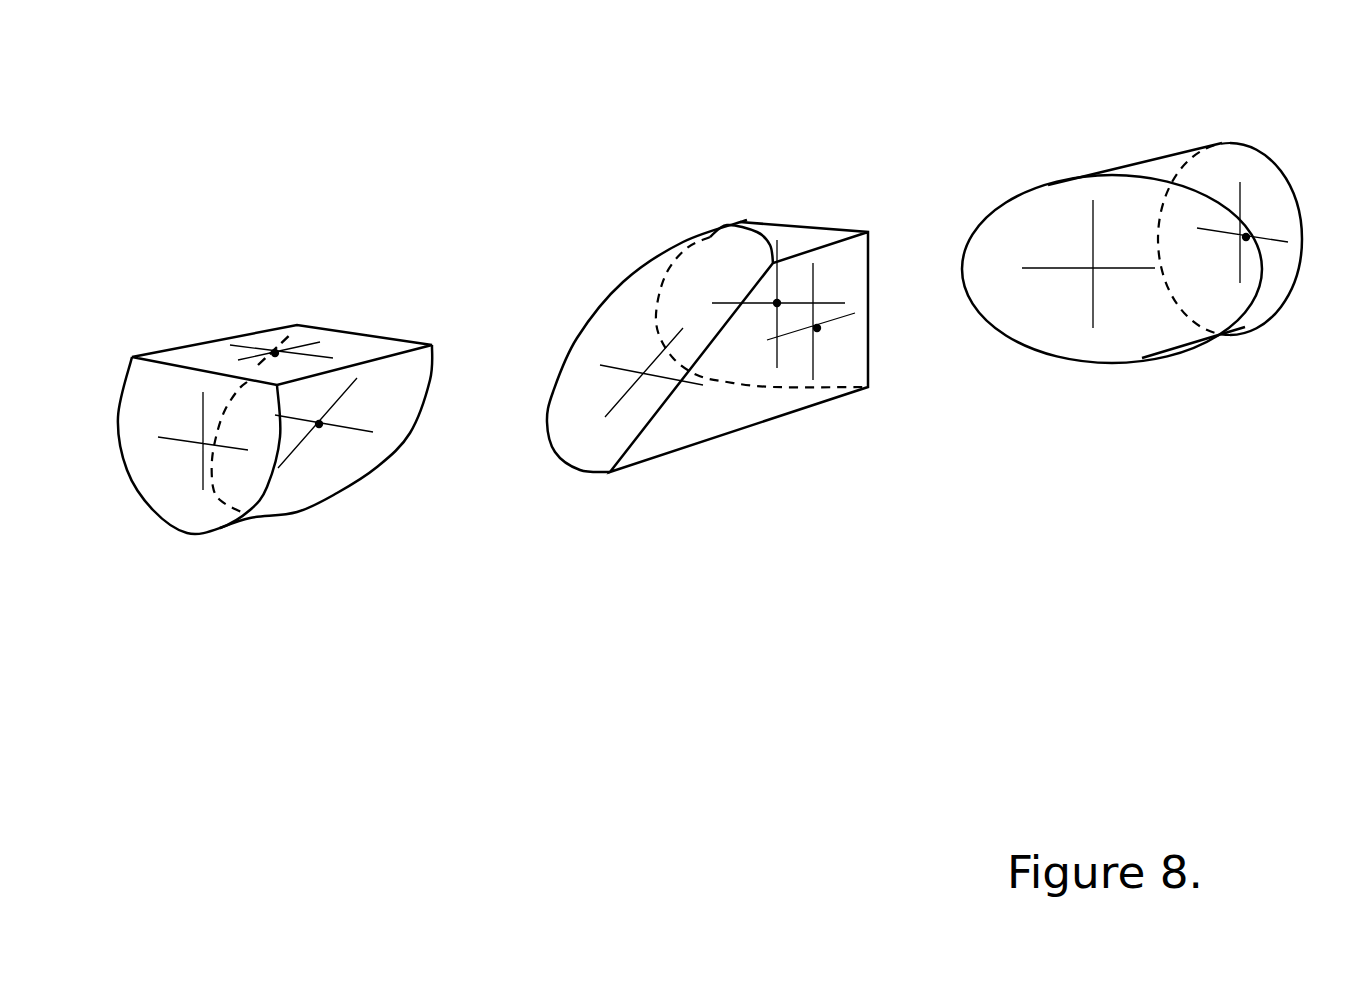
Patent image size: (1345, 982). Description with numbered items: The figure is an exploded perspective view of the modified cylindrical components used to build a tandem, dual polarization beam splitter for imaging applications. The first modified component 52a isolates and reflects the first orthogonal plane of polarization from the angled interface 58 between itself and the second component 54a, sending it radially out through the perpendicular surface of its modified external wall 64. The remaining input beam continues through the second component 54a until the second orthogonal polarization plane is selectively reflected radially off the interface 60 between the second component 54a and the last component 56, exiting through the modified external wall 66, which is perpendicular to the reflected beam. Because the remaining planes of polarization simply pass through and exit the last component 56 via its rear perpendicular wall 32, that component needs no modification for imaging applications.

The first modified component 52a is at (327, 507).
The second component 54a is at (722, 432).
The last component 56 is at (1168, 358).
The angled interface 58 is at (319, 424).
The interface 60 is at (777, 303).
The modified external wall 64 is at (275, 353).
The modified external wall 66 is at (817, 328).
The rear perpendicular wall 32 is at (1246, 237).